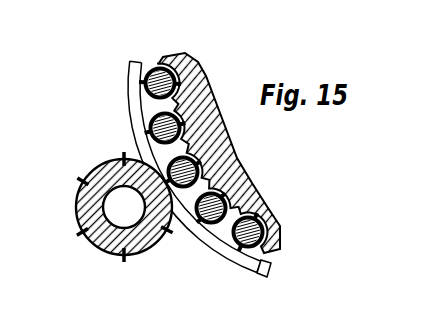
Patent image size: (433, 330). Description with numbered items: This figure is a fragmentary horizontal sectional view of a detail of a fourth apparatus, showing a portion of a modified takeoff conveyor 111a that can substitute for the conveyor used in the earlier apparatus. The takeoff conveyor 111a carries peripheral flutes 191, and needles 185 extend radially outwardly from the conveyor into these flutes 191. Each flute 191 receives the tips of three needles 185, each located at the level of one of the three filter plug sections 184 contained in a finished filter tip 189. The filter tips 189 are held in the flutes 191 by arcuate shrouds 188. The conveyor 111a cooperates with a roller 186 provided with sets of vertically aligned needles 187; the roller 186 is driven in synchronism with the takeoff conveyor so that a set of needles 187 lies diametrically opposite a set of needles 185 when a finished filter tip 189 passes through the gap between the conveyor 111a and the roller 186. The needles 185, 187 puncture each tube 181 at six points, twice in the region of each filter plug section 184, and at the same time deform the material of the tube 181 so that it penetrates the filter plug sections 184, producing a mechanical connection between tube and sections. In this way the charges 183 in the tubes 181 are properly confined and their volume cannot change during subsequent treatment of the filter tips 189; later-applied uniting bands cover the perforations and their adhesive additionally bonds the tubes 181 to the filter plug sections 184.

The takeoff conveyor 111a is at (234, 152).
The tube 181 is at (157, 66).
The charge 183 is at (258, 277).
The filter plug section 184 is at (143, 96).
The needle 185 is at (193, 116).
The roller 186 is at (95, 243).
The needle 187 is at (84, 230).
The arcuate shroud 188 is at (203, 237).
The filter tip 189 is at (144, 58).
The flute 191 is at (264, 231).